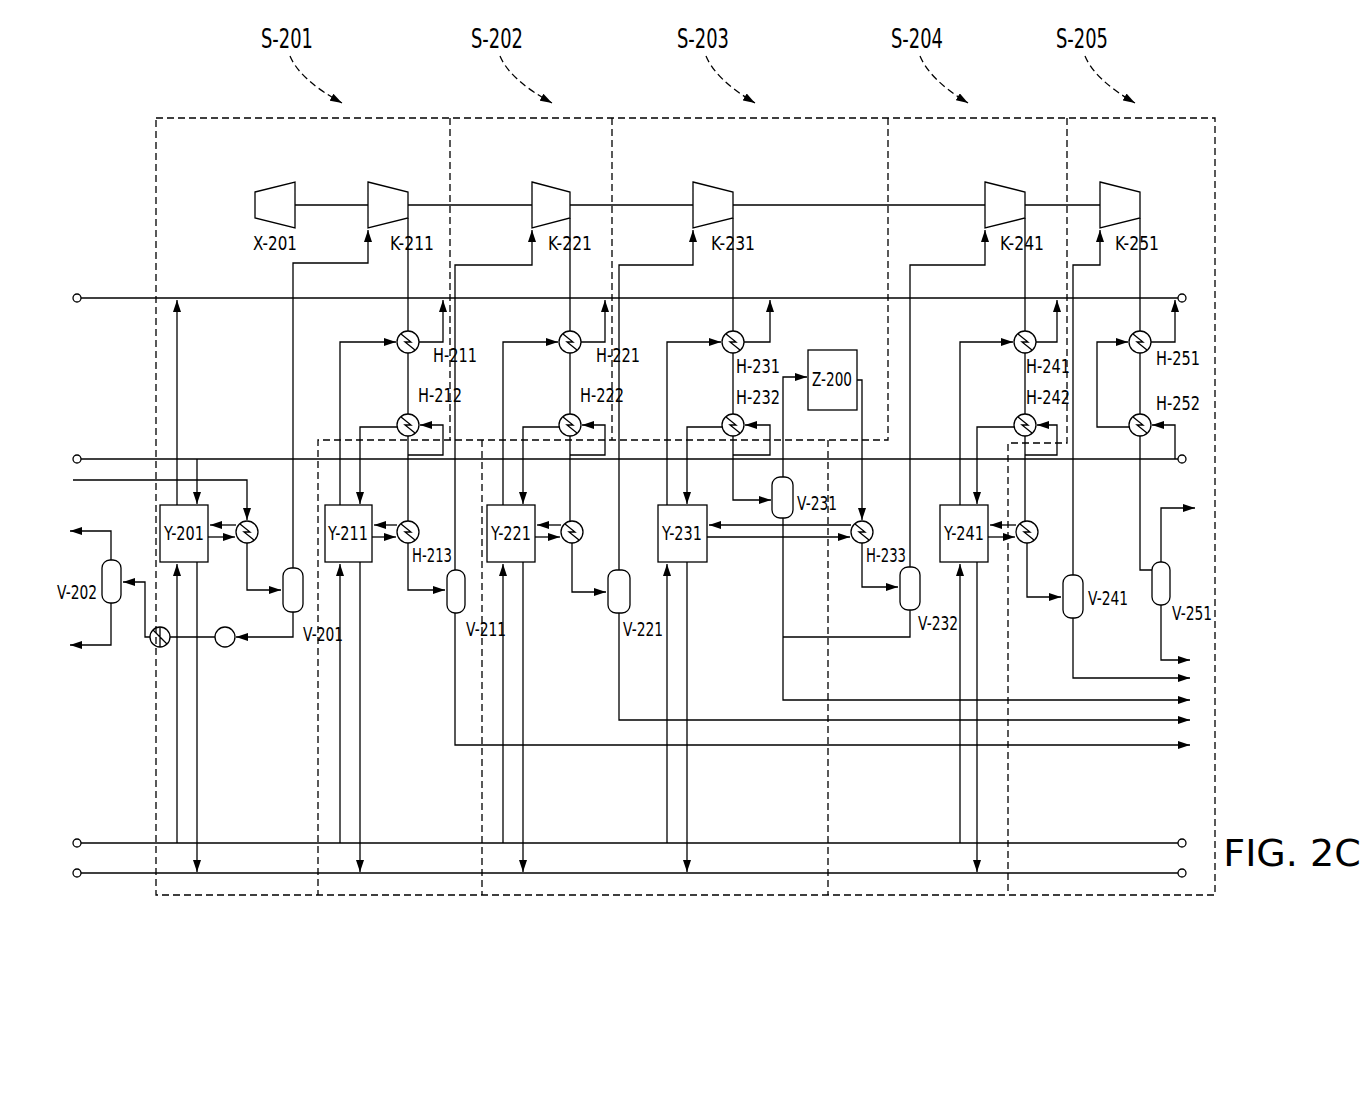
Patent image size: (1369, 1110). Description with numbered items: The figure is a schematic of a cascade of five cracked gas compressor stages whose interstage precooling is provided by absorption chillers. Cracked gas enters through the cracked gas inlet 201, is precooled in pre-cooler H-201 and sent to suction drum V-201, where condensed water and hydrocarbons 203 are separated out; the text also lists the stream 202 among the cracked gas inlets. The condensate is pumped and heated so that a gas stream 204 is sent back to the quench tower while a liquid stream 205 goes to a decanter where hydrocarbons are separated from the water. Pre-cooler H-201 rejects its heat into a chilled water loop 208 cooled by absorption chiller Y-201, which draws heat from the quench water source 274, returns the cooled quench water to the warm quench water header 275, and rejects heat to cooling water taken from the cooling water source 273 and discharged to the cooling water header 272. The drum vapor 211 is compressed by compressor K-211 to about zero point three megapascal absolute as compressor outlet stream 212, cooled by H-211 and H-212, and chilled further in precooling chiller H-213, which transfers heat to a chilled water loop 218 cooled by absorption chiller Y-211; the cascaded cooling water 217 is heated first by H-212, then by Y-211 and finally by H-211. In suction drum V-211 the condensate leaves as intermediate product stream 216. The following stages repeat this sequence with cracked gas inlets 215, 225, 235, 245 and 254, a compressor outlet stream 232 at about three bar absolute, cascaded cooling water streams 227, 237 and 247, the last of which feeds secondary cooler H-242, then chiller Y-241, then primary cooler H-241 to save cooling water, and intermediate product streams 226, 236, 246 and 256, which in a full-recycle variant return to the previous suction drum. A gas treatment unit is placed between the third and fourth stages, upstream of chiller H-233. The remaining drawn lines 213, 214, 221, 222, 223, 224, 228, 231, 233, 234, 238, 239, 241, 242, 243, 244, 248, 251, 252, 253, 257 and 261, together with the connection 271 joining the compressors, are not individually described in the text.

The cracked gas inlet 201 is at (143, 480).
The cracked gas inlet 202 is at (202, 621).
The condensed water and hydrocarbons 203 is at (280, 638).
The gas stream 204 is at (96, 530).
The liquid stream 205 is at (96, 645).
The chilled water loop 208 is at (238, 521).
The vapor stream from suction drum V-201 211 is at (290, 537).
The compressor outlet stream 212 is at (406, 298).
The cooled stream from H-211 213 is at (406, 390).
The stream from H-212 to H-213 214 is at (408, 490).
The cracked gas inlet 215 is at (407, 578).
The intermediate product stream 216 is at (578, 745).
The cascaded cooling water stream 217 is at (442, 453).
The chilled water loop 218 is at (398, 521).
The vapor stream from V-211 to compressor K- 221 is at (458, 505).
The compressed stream from K-221 222 is at (568, 298).
The cooled stream from H-221 223 is at (568, 380).
The stream from H-222 to H-223 224 is at (570, 490).
The cracked gas inlet 225 is at (570, 582).
The intermediate product stream 226 is at (730, 720).
The cascaded cooling water stream 227 is at (605, 450).
The heat exchanger H-223 228 is at (580, 521).
The vapor stream from V-221 to compressor K- 231 is at (621, 532).
The compressor outlet stream 232 is at (731, 298).
The cooled stream from H-231 233 is at (731, 395).
The stream from H-232 to separator V-231 234 is at (733, 480).
The cracked gas inlet 235 is at (870, 590).
The intermediate product stream 236 is at (940, 700).
The cascaded cooling water stream 237 is at (770, 450).
The stream between Y-231 and H-233 238 is at (746, 538).
The vapor stream from V-231 to unit Z-200 239 is at (796, 375).
The vapor stream from V-232 to compressor K- 241 is at (910, 520).
The compressed stream from K-241 242 is at (1023, 298).
The cooled stream from H-241 243 is at (1023, 380).
The stream from H-242 to H-243 244 is at (1025, 490).
The cracked gas inlet 245 is at (1030, 600).
The intermediate product stream 246 is at (1130, 678).
The cascaded cooling water stream 247 is at (1026, 457).
The heat exchanger H-243 248 is at (1021, 521).
The vapor stream from V-241 to compressor K- 251 is at (1075, 548).
The compressed stream from K-251 252 is at (1138, 298).
The cooled stream from H-251 253 is at (1138, 395).
The cracked gas inlet 254 is at (1138, 505).
The intermediate product stream 256 is at (1165, 656).
The coolant stream to H-252 257 is at (1177, 447).
The vapor product stream from V-251 261 is at (1165, 505).
The common drive shaft 271 is at (333, 200).
The cooling water header 272 is at (108, 298).
The cooling water source 273 is at (108, 459).
The quench water source 274 is at (145, 843).
The quench water header 275 is at (118, 873).